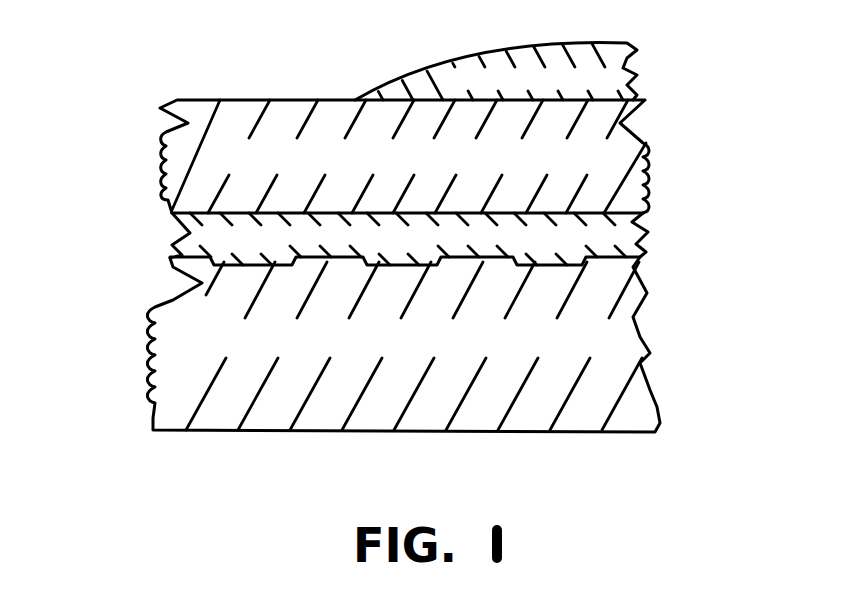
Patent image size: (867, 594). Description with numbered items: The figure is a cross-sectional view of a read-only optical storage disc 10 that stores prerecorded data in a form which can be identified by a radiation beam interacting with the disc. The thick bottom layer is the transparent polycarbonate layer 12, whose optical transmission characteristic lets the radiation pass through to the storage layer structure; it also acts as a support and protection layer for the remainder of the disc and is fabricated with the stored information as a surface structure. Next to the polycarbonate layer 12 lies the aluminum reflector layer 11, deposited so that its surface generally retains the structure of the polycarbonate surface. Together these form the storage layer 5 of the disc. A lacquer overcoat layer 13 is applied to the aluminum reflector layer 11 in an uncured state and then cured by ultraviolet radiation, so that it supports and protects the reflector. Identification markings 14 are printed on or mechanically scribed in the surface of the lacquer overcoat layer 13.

The read-only optical storage disc 10 is at (133, 163).
The identification markings 14 is at (627, 74).
The lacquer overcoat layer 13 is at (647, 165).
The storage layer 5 is at (175, 219).
The aluminum reflector layer 11 is at (641, 233).
The polycarbonate layer 12 is at (651, 353).